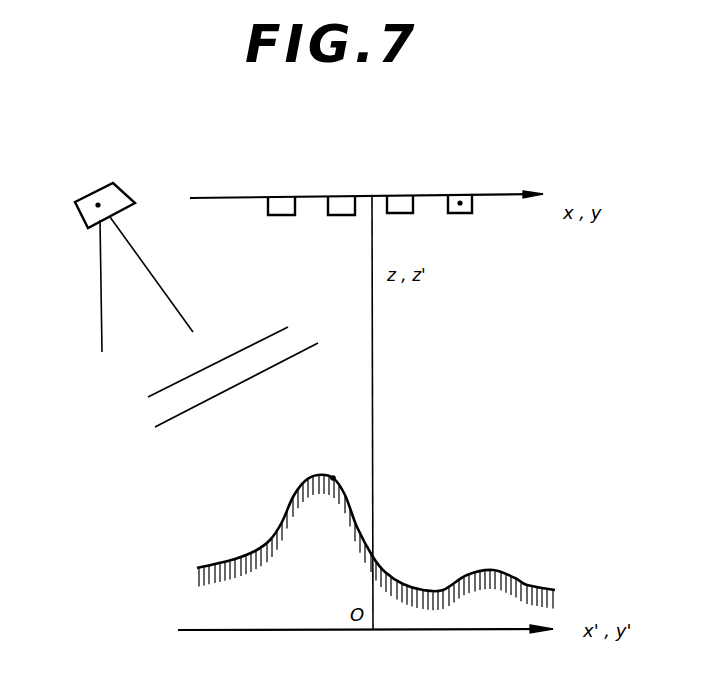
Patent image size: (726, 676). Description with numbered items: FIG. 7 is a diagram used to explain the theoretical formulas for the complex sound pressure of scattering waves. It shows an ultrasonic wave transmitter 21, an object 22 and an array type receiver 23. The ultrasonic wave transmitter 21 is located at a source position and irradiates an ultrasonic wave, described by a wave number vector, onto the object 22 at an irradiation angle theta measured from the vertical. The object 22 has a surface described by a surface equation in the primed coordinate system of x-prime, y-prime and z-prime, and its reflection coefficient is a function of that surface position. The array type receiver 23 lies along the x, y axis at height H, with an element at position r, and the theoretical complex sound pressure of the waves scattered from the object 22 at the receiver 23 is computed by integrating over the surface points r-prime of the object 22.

The ultrasonic wave transmitter 21 is at (88, 215).
The object 22 is at (255, 533).
The array type receiver 23 is at (461, 187).